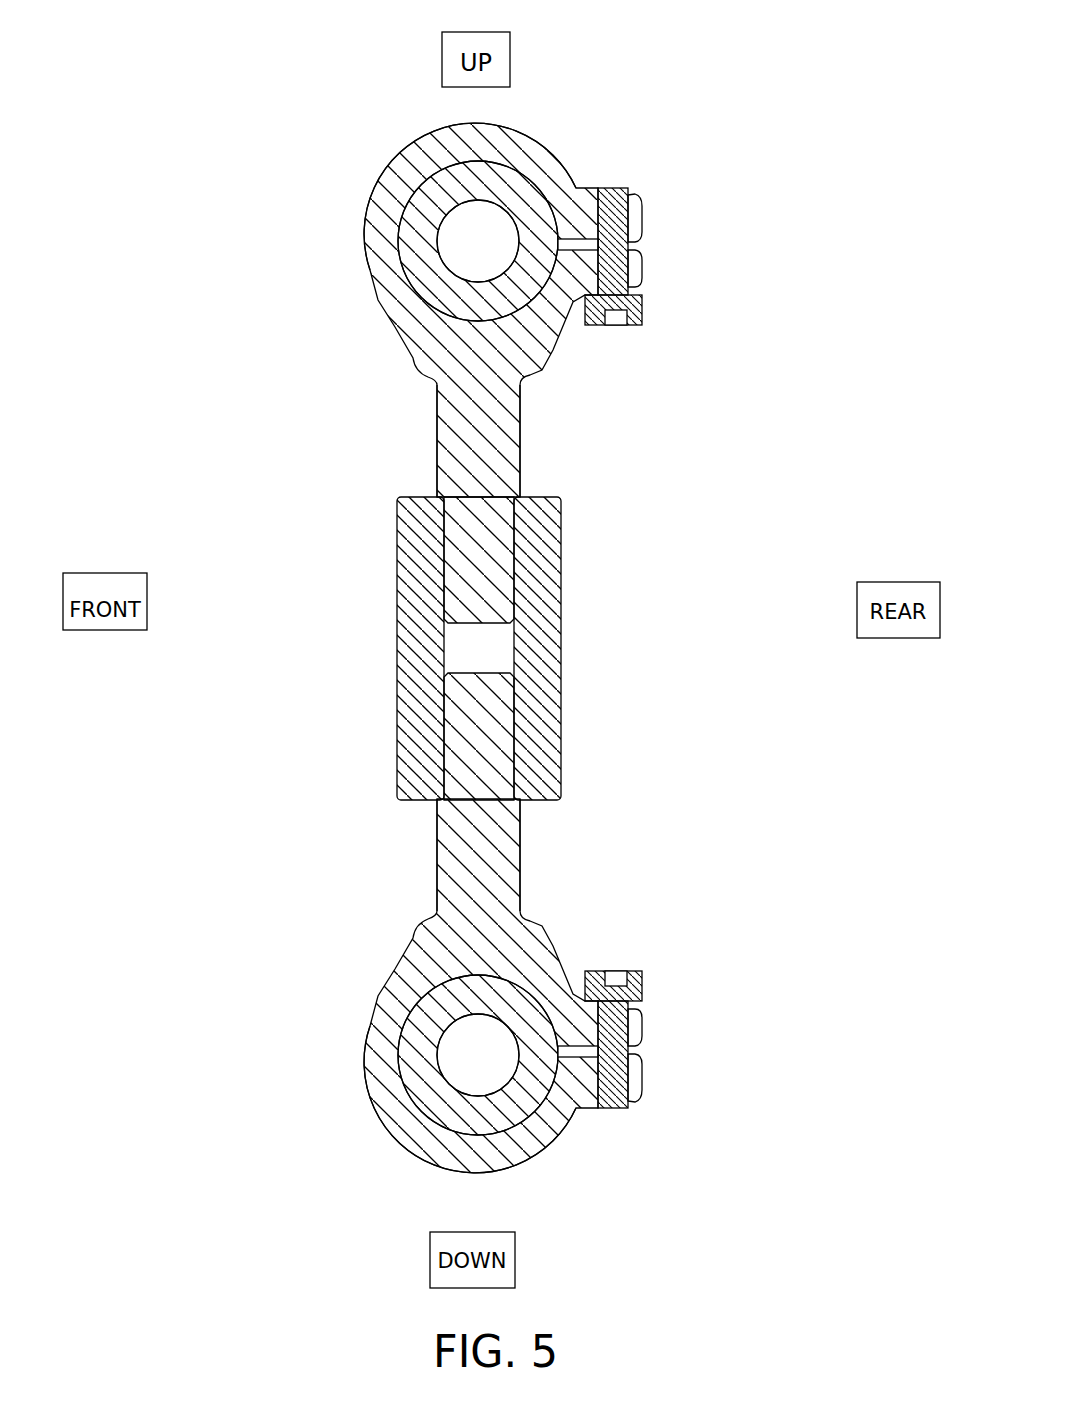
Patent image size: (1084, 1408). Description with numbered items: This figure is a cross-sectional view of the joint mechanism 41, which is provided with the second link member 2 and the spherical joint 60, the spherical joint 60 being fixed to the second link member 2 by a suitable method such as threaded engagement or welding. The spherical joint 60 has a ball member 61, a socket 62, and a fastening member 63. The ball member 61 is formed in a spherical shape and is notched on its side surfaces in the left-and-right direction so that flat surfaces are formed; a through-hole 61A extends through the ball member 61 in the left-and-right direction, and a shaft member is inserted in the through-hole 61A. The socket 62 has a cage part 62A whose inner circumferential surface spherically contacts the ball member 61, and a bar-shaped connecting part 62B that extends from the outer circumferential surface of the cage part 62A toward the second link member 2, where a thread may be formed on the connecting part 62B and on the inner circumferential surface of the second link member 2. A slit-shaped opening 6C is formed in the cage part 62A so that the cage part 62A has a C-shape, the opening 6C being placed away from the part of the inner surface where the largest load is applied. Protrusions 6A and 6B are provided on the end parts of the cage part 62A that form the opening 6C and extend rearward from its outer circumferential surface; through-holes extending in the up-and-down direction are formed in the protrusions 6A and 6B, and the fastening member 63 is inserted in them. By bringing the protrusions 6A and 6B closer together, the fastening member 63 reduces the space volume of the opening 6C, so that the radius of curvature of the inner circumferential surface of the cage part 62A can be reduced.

The joint mechanism 41 is at (484, 12).
The second link member 2 is at (417, 660).
The spherical joint 60 is at (730, 619).
The protrusion 6A is at (642, 214).
The protrusion 6B is at (642, 278).
The opening 6C is at (640, 246).
The fastening member 63 is at (640, 308).
The ball member 61 is at (440, 297).
The through-hole 61A is at (497, 207).
The socket 62 is at (392, 168).
The cage part 62A is at (463, 142).
The connecting part 62B is at (470, 411).